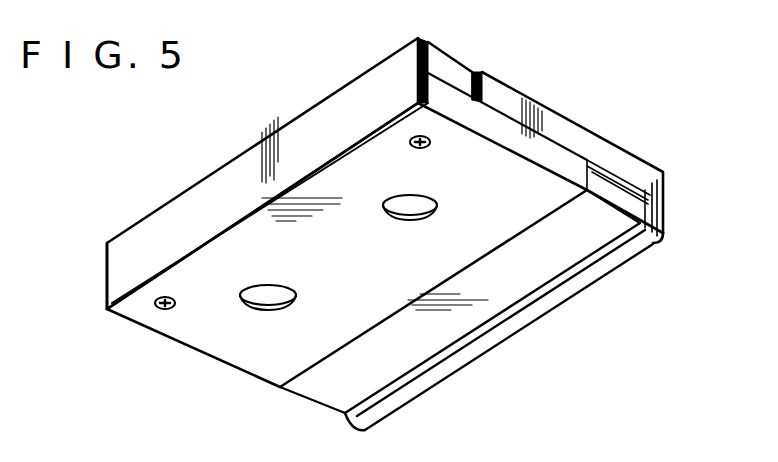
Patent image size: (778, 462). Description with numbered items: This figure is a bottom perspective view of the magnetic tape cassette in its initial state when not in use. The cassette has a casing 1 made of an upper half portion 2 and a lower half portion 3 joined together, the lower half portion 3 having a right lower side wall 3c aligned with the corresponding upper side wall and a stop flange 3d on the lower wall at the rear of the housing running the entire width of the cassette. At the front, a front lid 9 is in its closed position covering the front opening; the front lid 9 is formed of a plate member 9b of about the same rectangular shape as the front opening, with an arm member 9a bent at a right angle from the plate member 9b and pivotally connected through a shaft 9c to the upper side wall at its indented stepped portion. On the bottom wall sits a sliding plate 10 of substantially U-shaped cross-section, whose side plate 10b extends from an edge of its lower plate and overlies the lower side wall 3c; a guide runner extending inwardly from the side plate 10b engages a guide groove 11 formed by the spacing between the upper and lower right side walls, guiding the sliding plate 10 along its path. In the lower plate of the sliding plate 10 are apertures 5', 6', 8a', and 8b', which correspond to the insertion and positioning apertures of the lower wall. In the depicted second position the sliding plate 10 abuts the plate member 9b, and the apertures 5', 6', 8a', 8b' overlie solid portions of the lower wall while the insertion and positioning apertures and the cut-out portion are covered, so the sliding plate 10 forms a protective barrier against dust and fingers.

The casing 1 is at (537, 265).
The upper half portion 2 is at (656, 180).
The lower half portion 3 is at (519, 310).
The lower side wall 3c is at (645, 236).
The stop flange 3d is at (566, 287).
The aperture 5' is at (268, 318).
The aperture 6' is at (410, 229).
The aperture 8a' is at (161, 336).
The aperture 8b' is at (429, 160).
The front lid 9 is at (288, 156).
The arm member 9a is at (468, 76).
The plate member 9b is at (372, 90).
The shaft 9c is at (455, 62).
The sliding plate 10 is at (253, 405).
The side plate 10b is at (540, 137).
The guide groove 11 is at (614, 174).